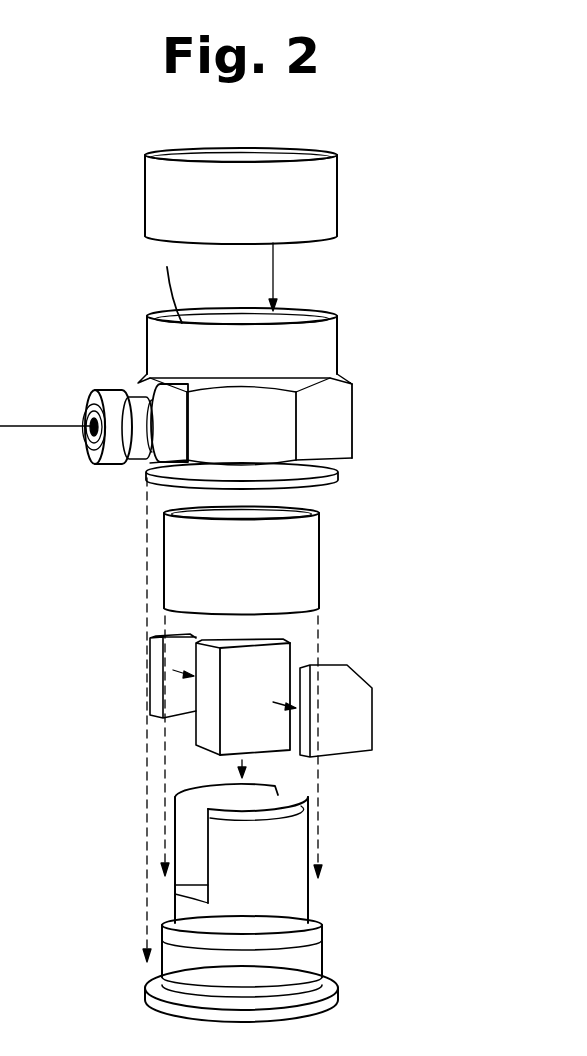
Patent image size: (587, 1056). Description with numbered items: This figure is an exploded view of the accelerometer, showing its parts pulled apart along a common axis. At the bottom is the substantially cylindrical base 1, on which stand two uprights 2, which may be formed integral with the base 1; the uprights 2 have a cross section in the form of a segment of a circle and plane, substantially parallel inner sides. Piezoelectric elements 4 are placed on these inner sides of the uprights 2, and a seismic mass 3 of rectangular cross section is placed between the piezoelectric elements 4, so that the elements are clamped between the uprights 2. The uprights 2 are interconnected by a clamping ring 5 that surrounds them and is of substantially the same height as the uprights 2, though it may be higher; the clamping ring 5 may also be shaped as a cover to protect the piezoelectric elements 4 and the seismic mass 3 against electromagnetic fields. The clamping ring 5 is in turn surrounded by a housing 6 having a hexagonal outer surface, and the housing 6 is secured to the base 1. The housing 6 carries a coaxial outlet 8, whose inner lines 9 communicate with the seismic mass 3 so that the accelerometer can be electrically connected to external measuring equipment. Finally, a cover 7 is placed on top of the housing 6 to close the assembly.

The base 1 is at (146, 989).
The uprights 2 is at (176, 832).
The seismic mass 3 is at (203, 725).
The piezoelectric elements 4 is at (367, 681).
The clamping ring 5 is at (172, 570).
The housing 6 is at (153, 348).
The cover 7 is at (151, 178).
The coaxial outlet 8 is at (88, 445).
The inner lines 9 is at (172, 292).